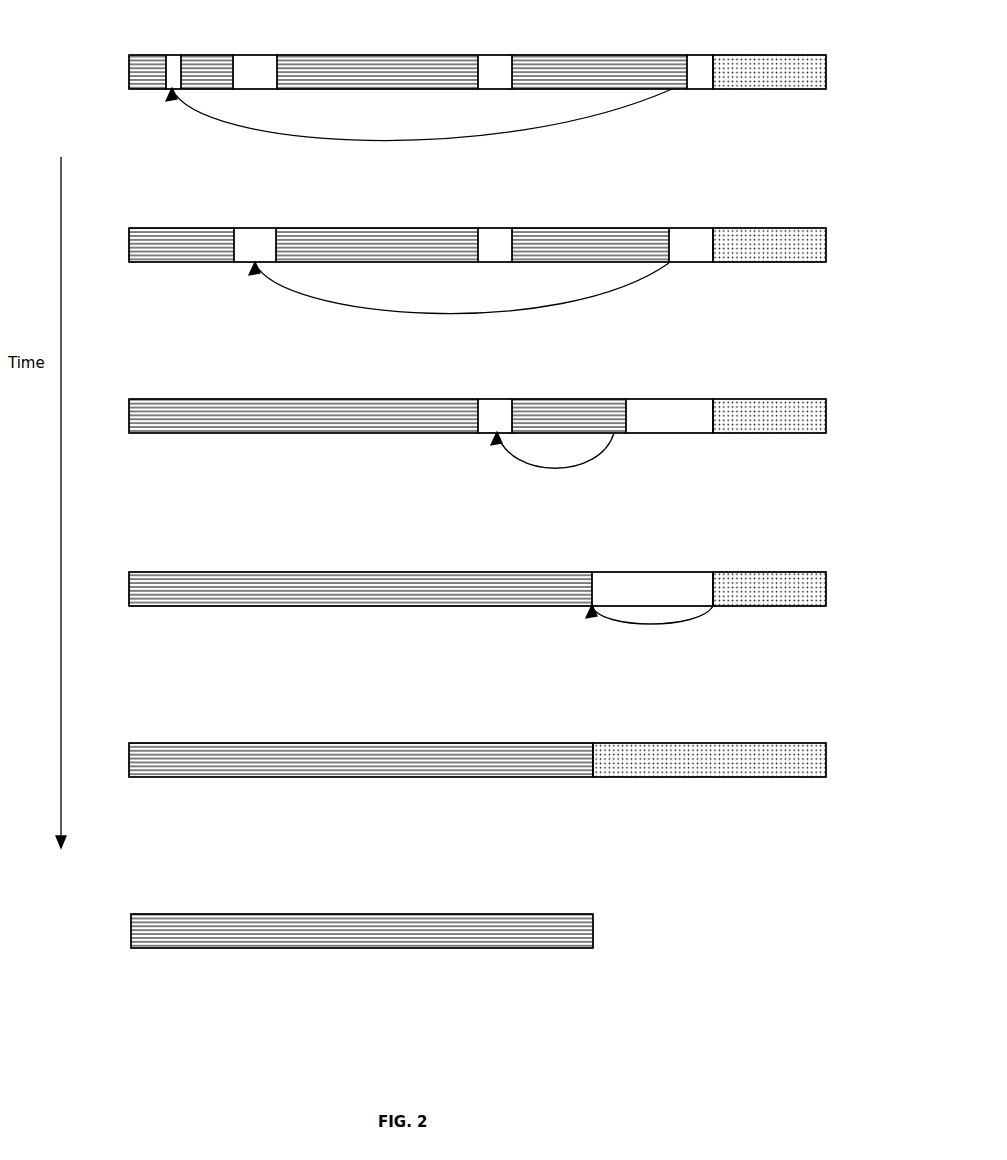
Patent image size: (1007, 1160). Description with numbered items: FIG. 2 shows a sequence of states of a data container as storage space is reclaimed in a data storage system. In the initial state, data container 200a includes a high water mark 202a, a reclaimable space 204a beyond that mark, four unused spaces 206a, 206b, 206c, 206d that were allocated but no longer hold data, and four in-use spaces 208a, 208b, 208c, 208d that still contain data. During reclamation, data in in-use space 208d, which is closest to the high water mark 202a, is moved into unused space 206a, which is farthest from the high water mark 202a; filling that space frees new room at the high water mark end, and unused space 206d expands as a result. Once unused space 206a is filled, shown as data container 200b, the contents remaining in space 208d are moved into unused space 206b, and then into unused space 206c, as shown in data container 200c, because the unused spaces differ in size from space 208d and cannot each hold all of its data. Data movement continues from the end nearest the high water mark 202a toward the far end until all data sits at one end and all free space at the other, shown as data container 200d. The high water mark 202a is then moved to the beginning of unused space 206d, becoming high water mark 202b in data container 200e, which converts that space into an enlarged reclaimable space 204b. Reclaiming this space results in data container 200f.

The data container 200a is at (516, 73).
The data container 200b is at (516, 245).
The data container 200c is at (515, 417).
The data container 200d is at (516, 590).
The data container 200e is at (516, 761).
The data container 200f is at (399, 930).
The high water mark 202a is at (714, 54).
The high water mark 202b is at (596, 742).
The reclaimable space 204a is at (738, 90).
The enlarged reclaimable space 204b is at (712, 778).
The unused space 206a is at (210, 60).
The unused space 206b is at (284, 146).
The unused space 206c is at (526, 231).
The unused space 206d is at (644, 317).
The in-use space 208a is at (119, 85).
The in-use space 208b is at (231, 85).
The in-use space 208c is at (377, 172).
The in-use space 208d is at (599, 258).